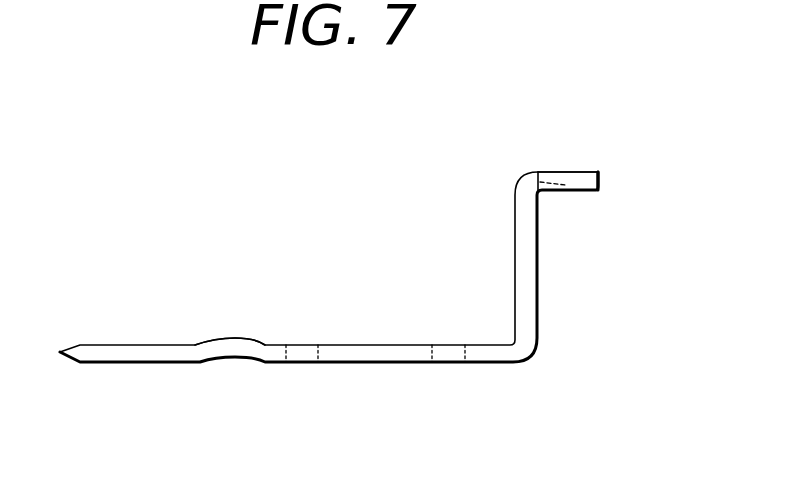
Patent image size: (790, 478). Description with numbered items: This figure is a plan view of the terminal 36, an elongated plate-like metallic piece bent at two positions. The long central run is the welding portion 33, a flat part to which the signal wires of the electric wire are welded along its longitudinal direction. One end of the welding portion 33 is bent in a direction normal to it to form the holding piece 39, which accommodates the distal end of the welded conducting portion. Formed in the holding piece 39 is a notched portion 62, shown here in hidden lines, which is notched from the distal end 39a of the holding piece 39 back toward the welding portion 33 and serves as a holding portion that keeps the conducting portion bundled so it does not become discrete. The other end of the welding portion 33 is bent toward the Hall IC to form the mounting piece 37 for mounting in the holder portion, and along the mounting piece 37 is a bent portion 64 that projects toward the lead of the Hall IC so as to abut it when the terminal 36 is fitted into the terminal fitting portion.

The terminal 36 is at (515, 148).
The welding portion 33 is at (538, 287).
The mounting piece 37 is at (382, 350).
The bent portion 64 is at (222, 362).
The holding piece 39 is at (573, 172).
The distal end 39a is at (600, 176).
The notched portion 62 is at (565, 185).